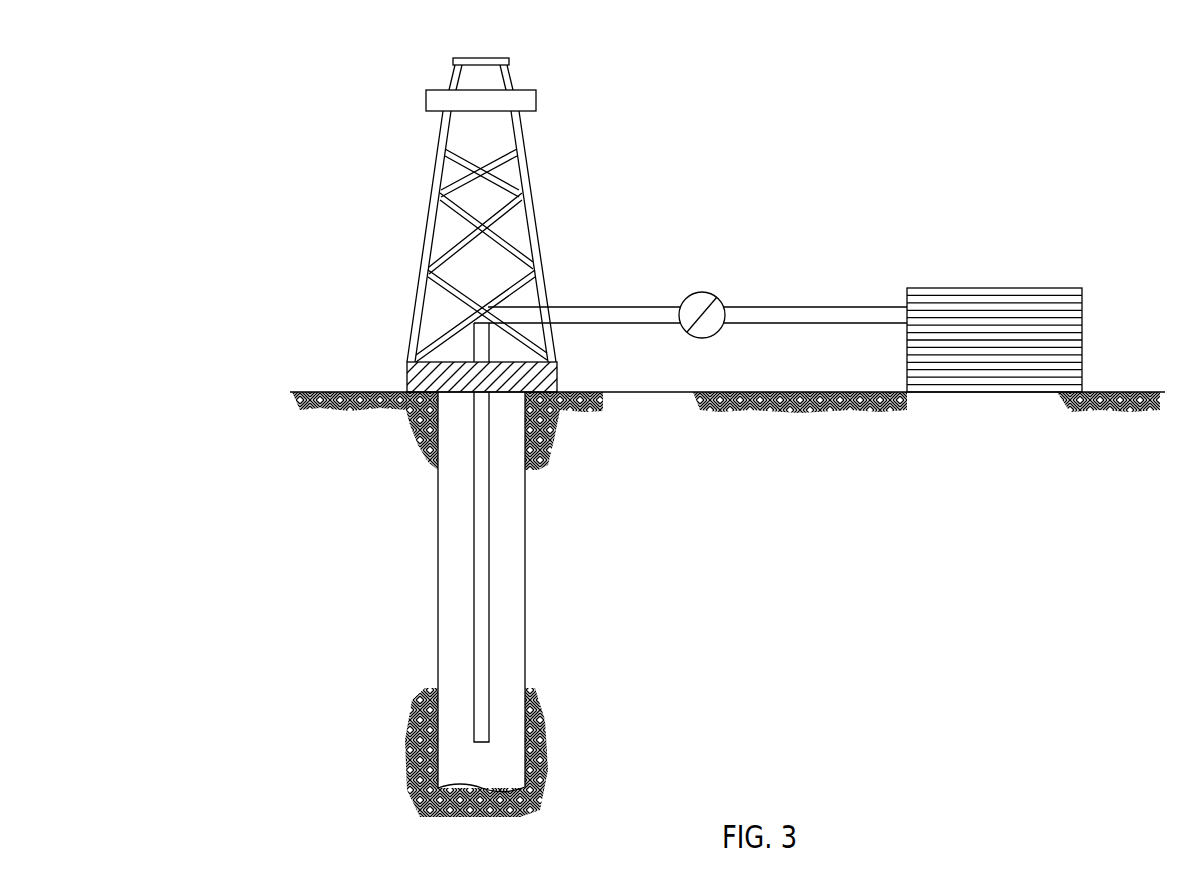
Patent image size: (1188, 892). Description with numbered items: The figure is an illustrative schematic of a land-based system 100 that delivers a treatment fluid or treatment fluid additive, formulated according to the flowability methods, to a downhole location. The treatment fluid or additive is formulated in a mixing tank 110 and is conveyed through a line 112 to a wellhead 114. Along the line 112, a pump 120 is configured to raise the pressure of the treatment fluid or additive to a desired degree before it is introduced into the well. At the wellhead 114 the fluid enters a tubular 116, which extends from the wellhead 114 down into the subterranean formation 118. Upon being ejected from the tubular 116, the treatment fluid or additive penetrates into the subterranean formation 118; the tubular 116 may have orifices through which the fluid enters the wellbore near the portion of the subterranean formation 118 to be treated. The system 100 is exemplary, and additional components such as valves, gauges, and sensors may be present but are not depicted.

The system 100 is at (284, 64).
The mixing tank 110 is at (1058, 291).
The line 112 is at (615, 307).
The wellhead 114 is at (407, 376).
The tubular 116 is at (490, 513).
The subterranean formation 118 is at (370, 598).
The pump 120 is at (713, 295).